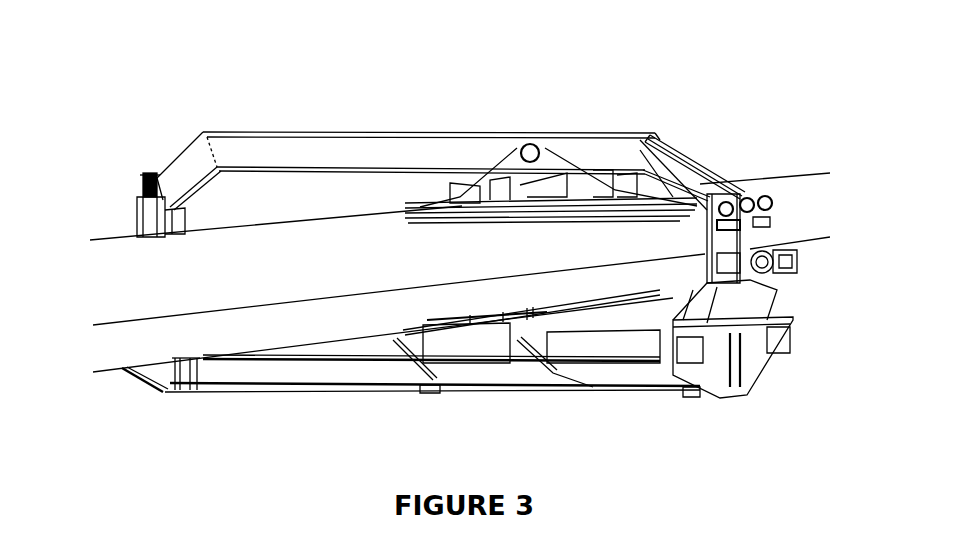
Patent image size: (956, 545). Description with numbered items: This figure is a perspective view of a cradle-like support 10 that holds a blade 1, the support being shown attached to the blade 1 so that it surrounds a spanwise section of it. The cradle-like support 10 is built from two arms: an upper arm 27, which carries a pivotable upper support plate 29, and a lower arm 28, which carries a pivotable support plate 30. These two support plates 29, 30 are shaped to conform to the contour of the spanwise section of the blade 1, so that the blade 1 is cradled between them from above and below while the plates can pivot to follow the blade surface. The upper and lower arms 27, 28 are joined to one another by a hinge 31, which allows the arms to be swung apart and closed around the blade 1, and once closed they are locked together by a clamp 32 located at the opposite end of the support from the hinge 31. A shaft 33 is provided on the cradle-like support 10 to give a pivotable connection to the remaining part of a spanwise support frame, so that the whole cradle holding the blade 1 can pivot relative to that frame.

The blade 1 is at (788, 174).
The cradle-like support 10 is at (428, 100).
The upper arm 27 is at (292, 132).
The lower arm 28 is at (326, 392).
The upper support plate 29 is at (655, 156).
The support plate 30 is at (503, 325).
The hinge 31 is at (773, 202).
The clamp 32 is at (128, 216).
The shaft 33 is at (797, 265).